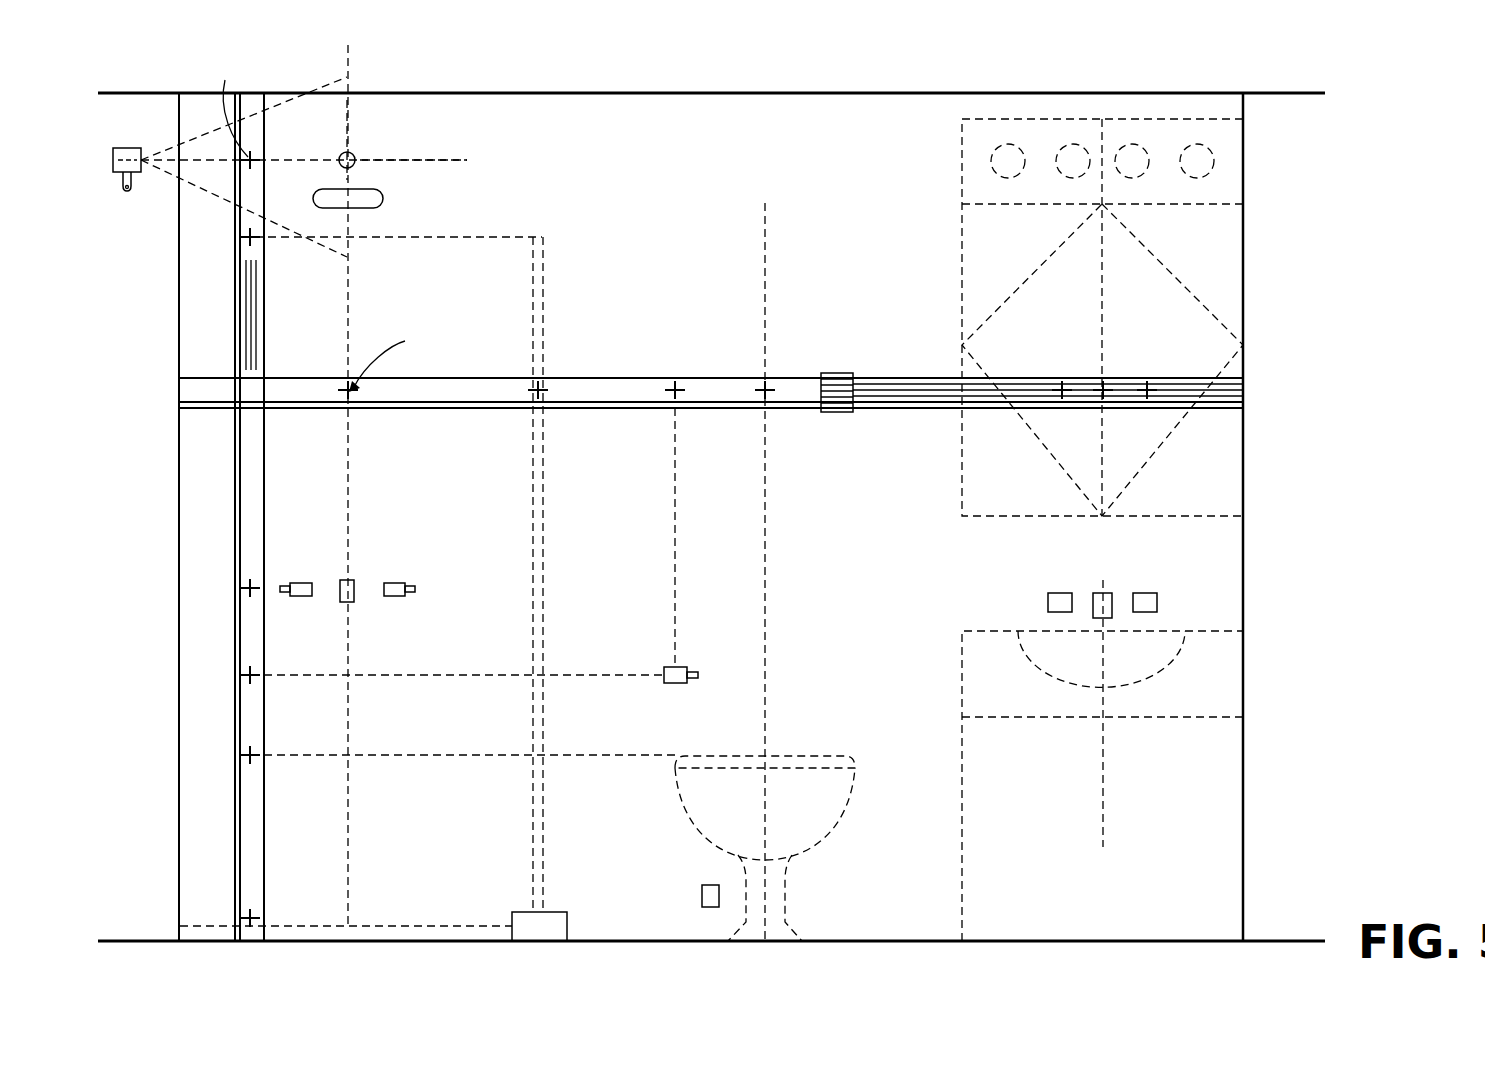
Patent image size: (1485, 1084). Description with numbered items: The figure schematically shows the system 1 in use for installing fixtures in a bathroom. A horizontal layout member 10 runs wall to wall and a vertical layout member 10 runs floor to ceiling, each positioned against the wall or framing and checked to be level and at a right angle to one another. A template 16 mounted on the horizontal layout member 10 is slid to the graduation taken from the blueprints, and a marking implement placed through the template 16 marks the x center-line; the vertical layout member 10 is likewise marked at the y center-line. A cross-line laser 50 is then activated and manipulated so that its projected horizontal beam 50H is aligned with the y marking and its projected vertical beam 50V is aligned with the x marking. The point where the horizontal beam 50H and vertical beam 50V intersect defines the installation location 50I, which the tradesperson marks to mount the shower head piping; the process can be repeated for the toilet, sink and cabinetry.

The system 1 is at (703, 212).
The layout member 10 is at (877, 383).
The template 16 is at (830, 373).
The cross-line laser 50 is at (117, 148).
The vertical beam 50V is at (350, 122).
The installation location 50I is at (353, 156).
The horizontal beam 50H is at (451, 159).